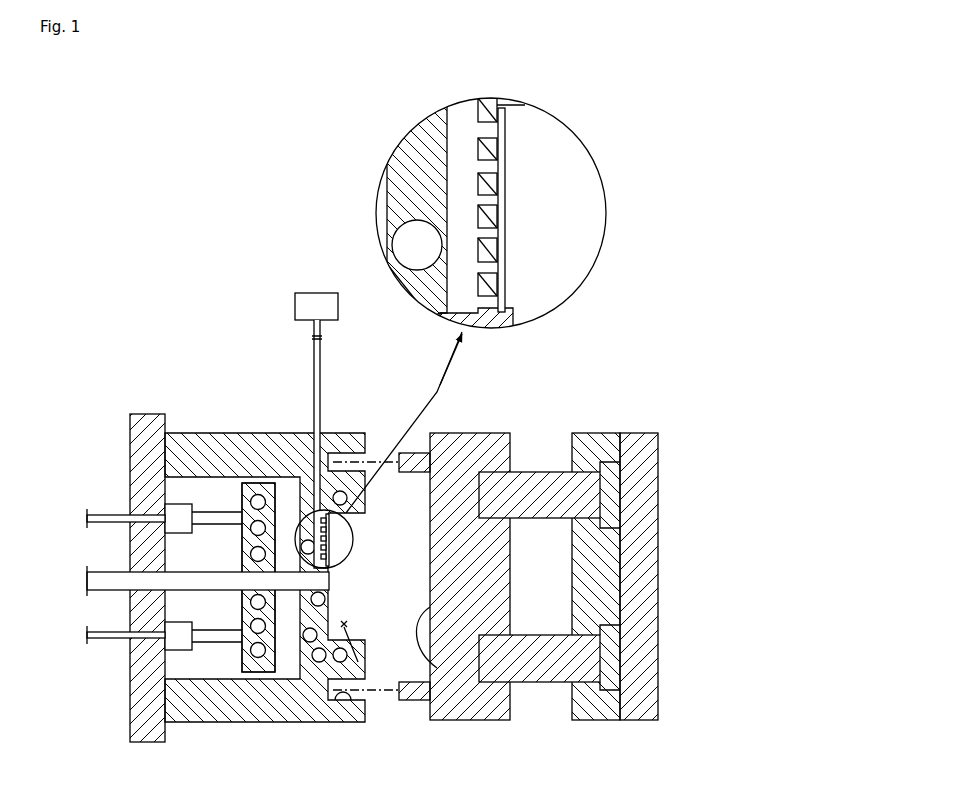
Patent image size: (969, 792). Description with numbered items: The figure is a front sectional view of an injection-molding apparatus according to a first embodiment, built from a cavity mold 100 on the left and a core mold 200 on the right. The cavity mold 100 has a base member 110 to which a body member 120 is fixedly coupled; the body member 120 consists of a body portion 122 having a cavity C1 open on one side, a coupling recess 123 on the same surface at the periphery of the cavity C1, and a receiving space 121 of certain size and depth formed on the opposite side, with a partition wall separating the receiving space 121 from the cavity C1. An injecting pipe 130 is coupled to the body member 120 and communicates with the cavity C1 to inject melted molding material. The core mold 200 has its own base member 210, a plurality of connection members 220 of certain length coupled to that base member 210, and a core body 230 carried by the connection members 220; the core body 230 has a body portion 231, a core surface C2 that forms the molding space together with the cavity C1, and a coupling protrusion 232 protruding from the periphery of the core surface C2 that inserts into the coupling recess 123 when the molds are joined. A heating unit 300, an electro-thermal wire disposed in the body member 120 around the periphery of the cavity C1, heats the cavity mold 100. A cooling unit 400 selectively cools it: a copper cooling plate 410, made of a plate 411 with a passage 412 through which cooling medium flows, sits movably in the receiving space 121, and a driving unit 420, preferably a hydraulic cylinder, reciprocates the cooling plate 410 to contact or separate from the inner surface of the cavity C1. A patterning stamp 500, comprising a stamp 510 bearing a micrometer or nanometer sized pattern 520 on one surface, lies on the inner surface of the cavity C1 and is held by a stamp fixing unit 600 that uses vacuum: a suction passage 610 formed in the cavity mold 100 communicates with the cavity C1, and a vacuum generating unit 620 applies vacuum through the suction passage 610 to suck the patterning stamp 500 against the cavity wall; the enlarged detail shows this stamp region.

The cavity mold 100 is at (68, 387).
The base member 110 is at (126, 696).
The body member 120 is at (253, 729).
The receiving space 121 is at (187, 667).
The body portion 122 is at (228, 707).
The coupling recess 123 is at (338, 699).
The injecting pipe 130 is at (112, 572).
The core mold 200 is at (600, 387).
The base member 210 is at (614, 727).
The connection members 220 is at (545, 695).
The core body 230 is at (489, 430).
The body portion 231 is at (487, 721).
The coupling protrusion 232 is at (415, 693).
The heating unit 300 is at (318, 662).
The cooling unit 400 is at (172, 367).
The cooling plate 410 is at (236, 486).
The plate 411 is at (259, 495).
The passage 412 is at (270, 508).
The driving unit 420 is at (210, 502).
The patterning stamp 500 is at (333, 539).
The stamp 510 is at (505, 158).
The pattern 520 is at (505, 210).
The stamp fixing unit 600 is at (378, 338).
The suction passage 610 is at (306, 455).
The vacuum generating unit 620 is at (328, 316).
The cavity C1 is at (358, 682).
The core surface C2 is at (437, 668).